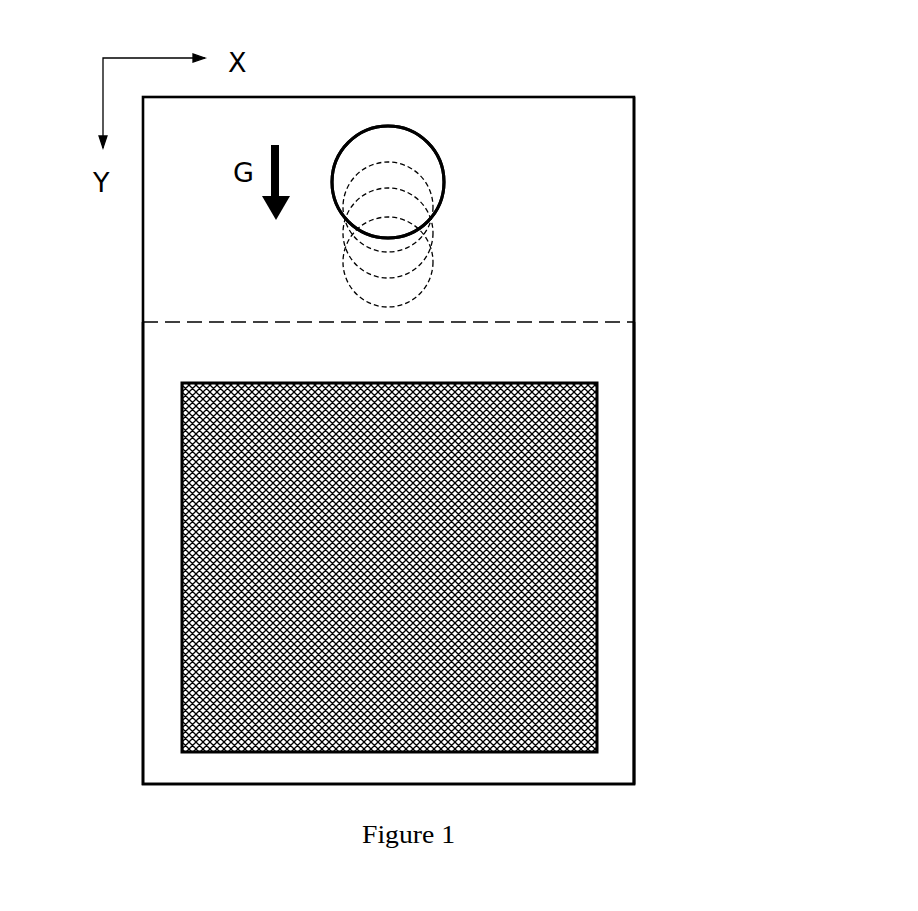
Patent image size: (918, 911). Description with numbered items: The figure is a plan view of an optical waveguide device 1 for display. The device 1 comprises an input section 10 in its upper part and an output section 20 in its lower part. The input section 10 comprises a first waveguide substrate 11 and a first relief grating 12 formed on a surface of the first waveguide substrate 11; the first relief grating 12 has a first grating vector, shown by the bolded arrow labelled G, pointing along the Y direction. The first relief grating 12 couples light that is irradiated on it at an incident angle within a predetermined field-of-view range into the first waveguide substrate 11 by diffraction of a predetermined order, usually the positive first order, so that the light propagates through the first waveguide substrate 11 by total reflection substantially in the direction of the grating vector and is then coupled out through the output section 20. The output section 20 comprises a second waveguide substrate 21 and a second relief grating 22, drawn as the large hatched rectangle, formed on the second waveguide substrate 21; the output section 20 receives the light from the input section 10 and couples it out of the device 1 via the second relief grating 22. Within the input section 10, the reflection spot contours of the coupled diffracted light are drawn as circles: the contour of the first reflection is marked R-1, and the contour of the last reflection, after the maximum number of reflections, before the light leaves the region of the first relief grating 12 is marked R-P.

The optical waveguide device for display 1 is at (378, 68).
The input section 10 is at (700, 196).
The first waveguide substrate 11 is at (634, 243).
The first relief grating 12 is at (332, 202).
The output section 20 is at (700, 496).
The second waveguide substrate 21 is at (634, 592).
The second relief grating 22 is at (182, 497).
The reflection spot contour of the first reflection R-1 is at (410, 168).
The reflection spot contour of the last reflection R-P is at (433, 262).